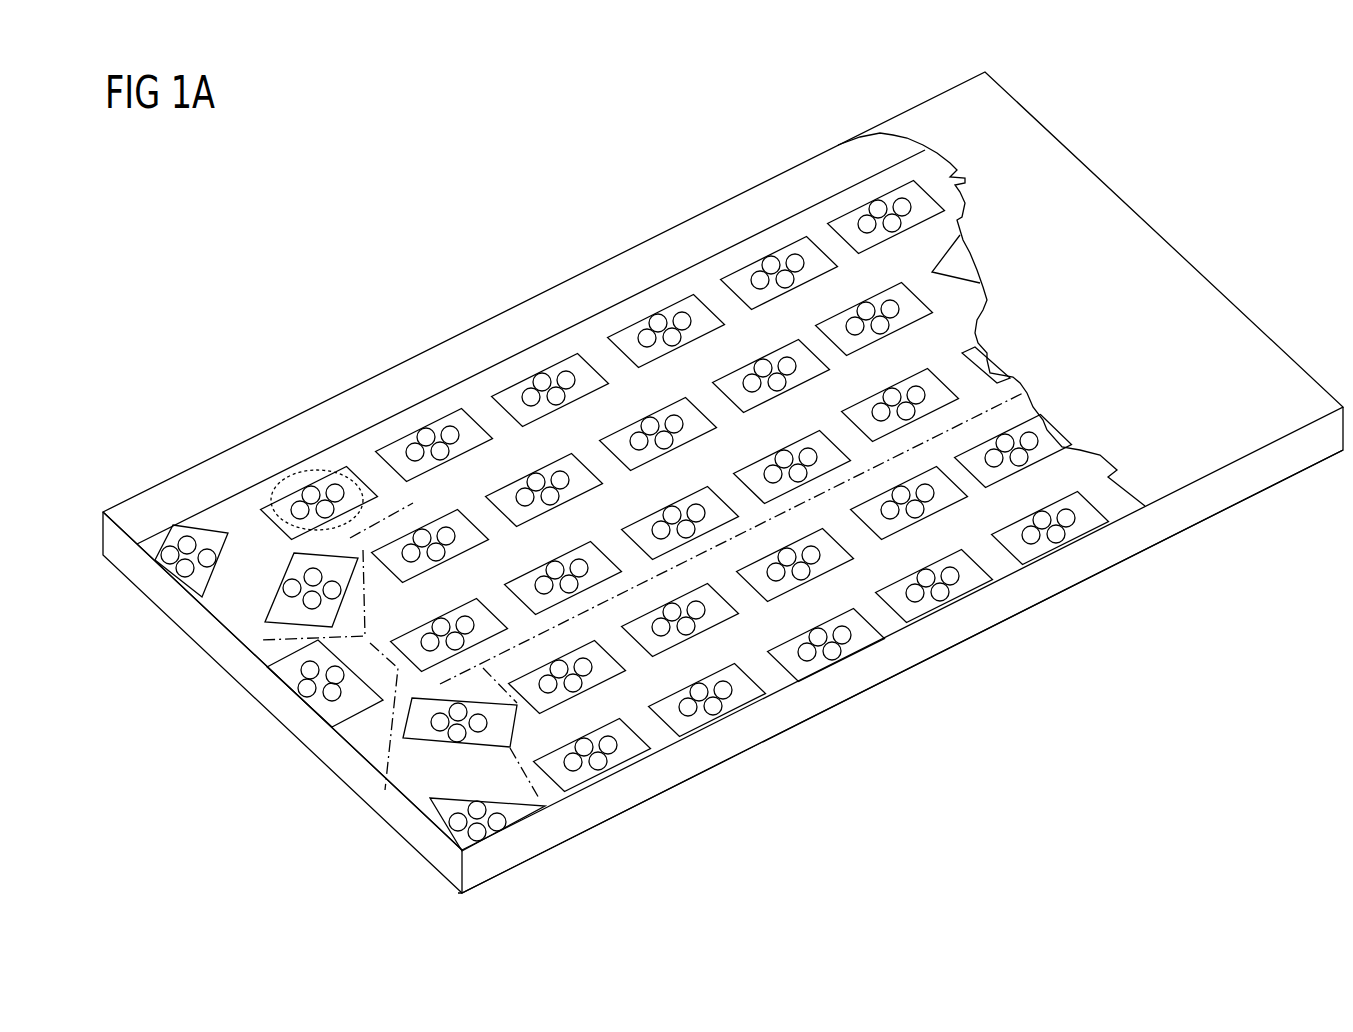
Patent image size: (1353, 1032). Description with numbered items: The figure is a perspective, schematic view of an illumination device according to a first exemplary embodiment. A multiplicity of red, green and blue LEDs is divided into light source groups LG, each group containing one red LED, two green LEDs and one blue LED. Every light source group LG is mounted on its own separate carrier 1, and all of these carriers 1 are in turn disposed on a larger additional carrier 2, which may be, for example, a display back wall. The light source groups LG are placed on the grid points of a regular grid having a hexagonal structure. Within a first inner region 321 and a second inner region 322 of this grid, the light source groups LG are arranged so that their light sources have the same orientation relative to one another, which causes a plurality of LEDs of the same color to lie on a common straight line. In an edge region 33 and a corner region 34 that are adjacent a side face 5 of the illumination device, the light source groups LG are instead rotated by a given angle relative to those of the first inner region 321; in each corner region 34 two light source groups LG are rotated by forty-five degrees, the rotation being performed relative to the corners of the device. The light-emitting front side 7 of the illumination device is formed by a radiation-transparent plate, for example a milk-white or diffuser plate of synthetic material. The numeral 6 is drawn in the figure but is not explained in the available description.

The carrier 1 is at (276, 518).
The additional carrier 2 is at (417, 766).
The side face 5 is at (240, 670).
The bottom edge of carrier 6 is at (457, 865).
The light-emitting front side 7 is at (1095, 175).
The edge region 33 is at (353, 745).
The corner region 34 is at (243, 522).
The first inner region 321 is at (523, 452).
The second inner region 322 is at (740, 638).
The light source group LG is at (290, 473).